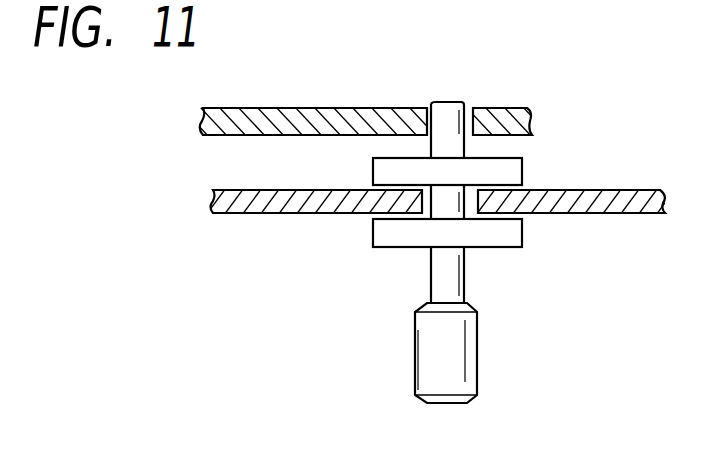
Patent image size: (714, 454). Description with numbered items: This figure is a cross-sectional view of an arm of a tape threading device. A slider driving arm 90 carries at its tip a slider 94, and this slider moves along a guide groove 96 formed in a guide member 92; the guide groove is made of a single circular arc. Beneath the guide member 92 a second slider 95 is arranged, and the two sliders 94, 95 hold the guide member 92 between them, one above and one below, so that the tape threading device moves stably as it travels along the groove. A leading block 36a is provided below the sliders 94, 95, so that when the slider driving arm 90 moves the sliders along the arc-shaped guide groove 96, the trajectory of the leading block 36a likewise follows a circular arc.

The slider driving arm 90 is at (322, 113).
The guide member 92 is at (290, 206).
The slider 94 is at (518, 173).
The slider 95 is at (518, 238).
The guide groove 96 is at (425, 205).
The leading block 36a is at (462, 350).